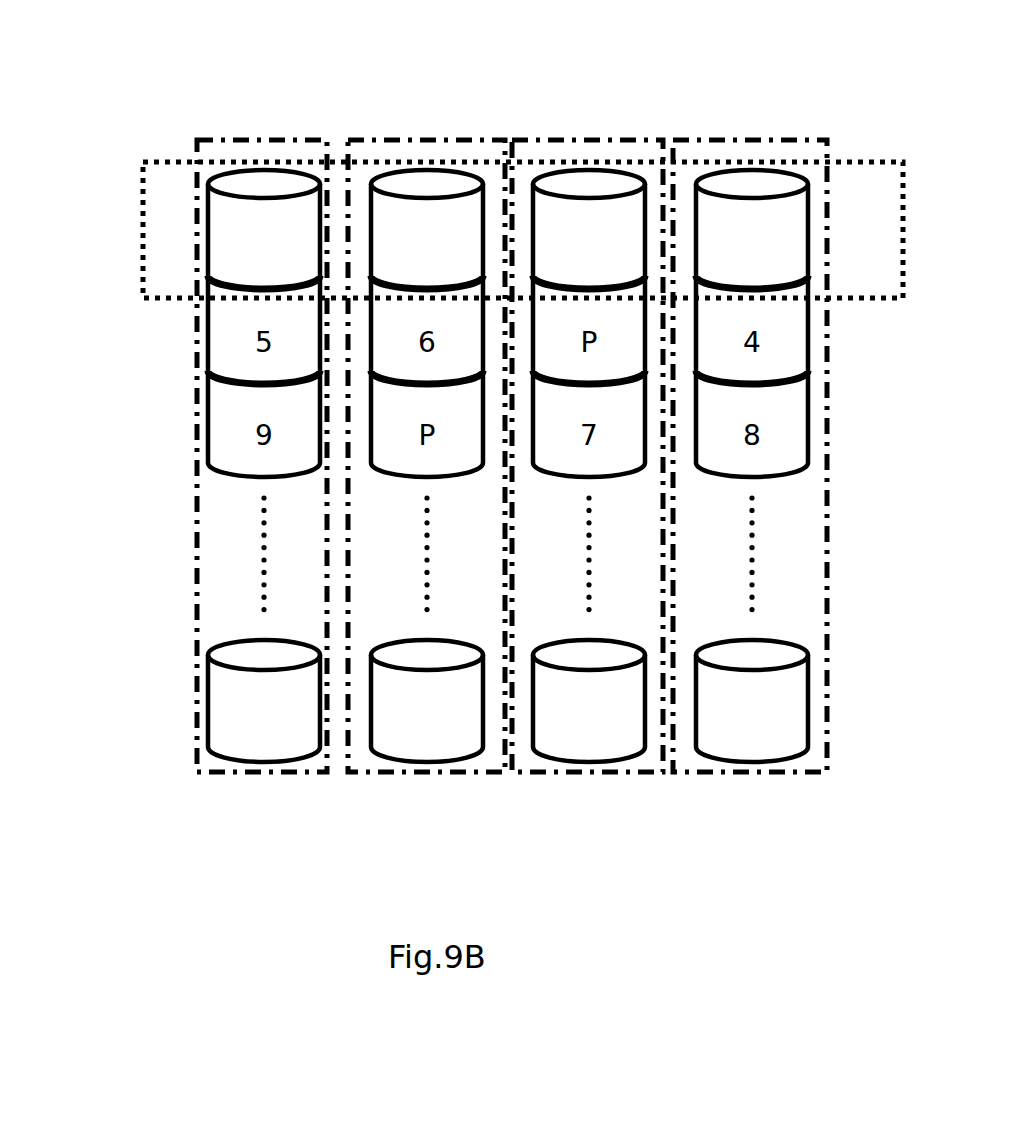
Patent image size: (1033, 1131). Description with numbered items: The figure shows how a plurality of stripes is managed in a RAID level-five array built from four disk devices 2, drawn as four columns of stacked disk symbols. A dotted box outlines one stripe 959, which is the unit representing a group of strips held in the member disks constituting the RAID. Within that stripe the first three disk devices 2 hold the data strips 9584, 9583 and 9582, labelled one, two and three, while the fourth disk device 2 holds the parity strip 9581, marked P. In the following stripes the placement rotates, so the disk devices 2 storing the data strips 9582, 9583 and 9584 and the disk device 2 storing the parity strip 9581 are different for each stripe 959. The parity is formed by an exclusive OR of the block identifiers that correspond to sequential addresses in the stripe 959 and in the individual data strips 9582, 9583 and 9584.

The disk devices 2 is at (680, 140).
The stripe 959 is at (143, 195).
The parity strip 9581 is at (772, 227).
The data strip 9582 is at (600, 213).
The data strip 9583 is at (390, 240).
The data strip 9584 is at (218, 240).